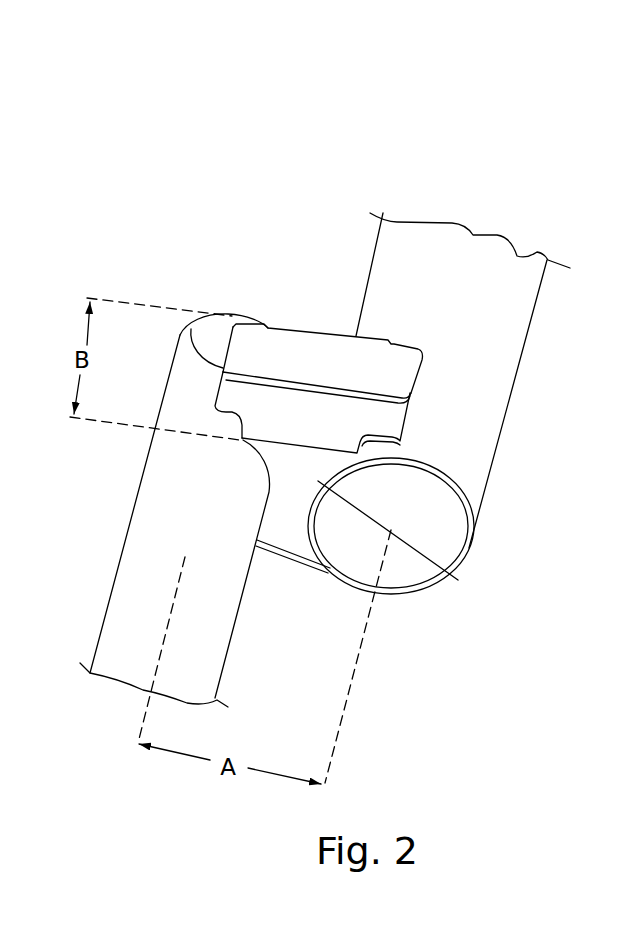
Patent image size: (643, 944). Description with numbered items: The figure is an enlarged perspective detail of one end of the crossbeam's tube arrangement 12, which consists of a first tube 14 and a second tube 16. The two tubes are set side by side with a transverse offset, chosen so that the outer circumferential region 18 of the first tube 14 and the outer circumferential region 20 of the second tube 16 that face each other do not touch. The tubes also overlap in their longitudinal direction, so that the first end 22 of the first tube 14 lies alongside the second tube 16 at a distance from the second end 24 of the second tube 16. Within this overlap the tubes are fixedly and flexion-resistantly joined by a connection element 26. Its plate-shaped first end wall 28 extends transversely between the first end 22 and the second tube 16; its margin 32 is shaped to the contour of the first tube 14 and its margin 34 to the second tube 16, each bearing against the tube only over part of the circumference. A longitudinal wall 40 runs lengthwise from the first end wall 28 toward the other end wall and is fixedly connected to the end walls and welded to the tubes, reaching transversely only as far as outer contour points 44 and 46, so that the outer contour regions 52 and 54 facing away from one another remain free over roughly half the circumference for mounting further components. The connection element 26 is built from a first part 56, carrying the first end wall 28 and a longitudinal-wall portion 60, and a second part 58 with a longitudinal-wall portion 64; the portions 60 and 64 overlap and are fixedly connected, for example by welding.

The tube arrangement 12 is at (485, 183).
The first tube 14 is at (517, 313).
The second tube 16 is at (118, 631).
The outer circumferential region of the first tube 18 is at (367, 282).
The outer circumferential region of the second tube 20 is at (243, 594).
The first end of the first tube 22 is at (470, 507).
The second end of the second tube 24 is at (233, 313).
The connection element 26 is at (212, 410).
The first end wall 28 is at (293, 500).
The margin 32 is at (458, 580).
The margin 34 is at (266, 494).
The longitudinal wall 40 is at (314, 398).
The outer contour point 44 is at (191, 329).
The outer contour point 46 is at (420, 372).
The outer contour region of the first tube 52 is at (171, 362).
The outer contour region of the second tube 54 is at (510, 391).
The first part of the connection element 56 is at (238, 442).
The second part of the connection element 58 is at (309, 325).
The longitudinal-wall portion 60 is at (376, 420).
The longitudinal-wall portion 64 is at (360, 350).